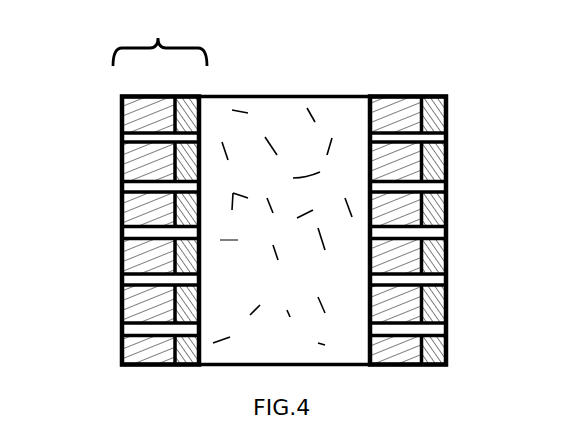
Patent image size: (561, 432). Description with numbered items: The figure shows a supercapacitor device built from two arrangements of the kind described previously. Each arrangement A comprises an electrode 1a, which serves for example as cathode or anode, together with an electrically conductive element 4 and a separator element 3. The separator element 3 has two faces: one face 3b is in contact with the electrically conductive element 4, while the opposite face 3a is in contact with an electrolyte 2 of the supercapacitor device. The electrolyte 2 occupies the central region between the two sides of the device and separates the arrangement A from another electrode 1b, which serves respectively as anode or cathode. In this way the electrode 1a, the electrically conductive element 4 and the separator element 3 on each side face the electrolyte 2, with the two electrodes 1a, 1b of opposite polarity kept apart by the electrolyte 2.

The electrode 1a is at (165, 221).
The another electrode 1b is at (398, 82).
The electrolyte 2 is at (293, 113).
The separator element 3 is at (173, 221).
The face of the separator element 3a is at (219, 307).
The face of the separator element 3b is at (156, 251).
The electrically conductive element 4 is at (121, 155).
The arrangement A is at (160, 37).